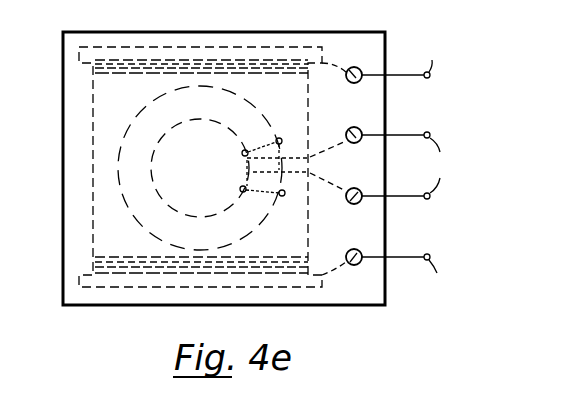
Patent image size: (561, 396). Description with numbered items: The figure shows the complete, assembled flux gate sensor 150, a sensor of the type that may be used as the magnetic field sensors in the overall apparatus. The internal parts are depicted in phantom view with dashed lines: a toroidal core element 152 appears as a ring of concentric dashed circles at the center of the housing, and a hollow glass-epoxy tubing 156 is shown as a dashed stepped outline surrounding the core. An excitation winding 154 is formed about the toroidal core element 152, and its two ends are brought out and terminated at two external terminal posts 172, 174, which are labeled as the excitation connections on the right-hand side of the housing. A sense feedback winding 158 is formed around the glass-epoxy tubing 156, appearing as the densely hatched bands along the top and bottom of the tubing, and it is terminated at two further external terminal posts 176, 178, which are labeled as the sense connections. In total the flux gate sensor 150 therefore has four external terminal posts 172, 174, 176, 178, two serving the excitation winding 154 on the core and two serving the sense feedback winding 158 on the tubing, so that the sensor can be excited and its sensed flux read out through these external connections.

The flux gate sensor 150 is at (75, 302).
The toroidal core element 152 is at (155, 117).
The excitation winding 154 is at (244, 164).
The hollow tubing 156 is at (104, 213).
The sense feedback winding 158 is at (278, 75).
The terminal post 172 is at (354, 127).
The terminal post 174 is at (355, 204).
The terminal post 176 is at (354, 67).
The terminal post 178 is at (354, 265).